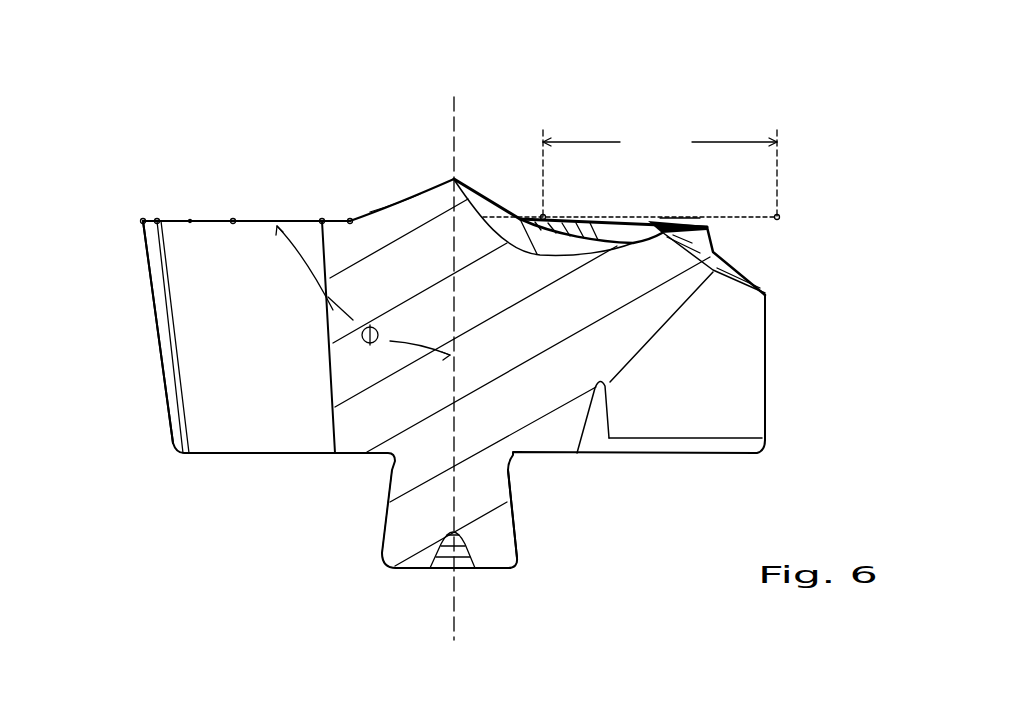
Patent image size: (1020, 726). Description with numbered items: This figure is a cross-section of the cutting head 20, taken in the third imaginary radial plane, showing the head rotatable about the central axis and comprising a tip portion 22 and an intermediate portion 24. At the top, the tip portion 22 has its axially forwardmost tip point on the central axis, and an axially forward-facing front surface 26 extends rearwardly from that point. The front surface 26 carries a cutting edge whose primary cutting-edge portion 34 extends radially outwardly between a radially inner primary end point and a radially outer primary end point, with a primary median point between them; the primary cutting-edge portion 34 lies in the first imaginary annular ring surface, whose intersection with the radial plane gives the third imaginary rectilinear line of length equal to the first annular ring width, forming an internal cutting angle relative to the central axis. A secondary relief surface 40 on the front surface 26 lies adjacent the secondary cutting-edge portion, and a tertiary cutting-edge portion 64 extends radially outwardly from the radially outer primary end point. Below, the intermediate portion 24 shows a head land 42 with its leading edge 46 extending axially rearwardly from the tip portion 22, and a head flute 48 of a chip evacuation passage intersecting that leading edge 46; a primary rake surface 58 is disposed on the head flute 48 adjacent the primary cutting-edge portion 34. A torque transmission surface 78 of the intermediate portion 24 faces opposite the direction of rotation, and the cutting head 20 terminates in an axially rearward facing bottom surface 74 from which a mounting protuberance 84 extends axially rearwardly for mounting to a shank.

The cutting head 20 is at (503, 163).
The tip portion 22 is at (743, 243).
The intermediate portion 24 is at (780, 355).
The front surface 26 is at (408, 197).
The primary cutting-edge portion 34 is at (255, 220).
The secondary relief surface 40 is at (387, 207).
The head land 42 is at (157, 382).
The leading edge 46 is at (152, 313).
The head flute 48 is at (255, 380).
The primary rake surface 58 is at (230, 266).
The tertiary cutting-edge portion 64 is at (143, 220).
The bottom surface 74 is at (657, 453).
The torque transmission surface 78 is at (716, 381).
The mounting protuberance 84 is at (483, 525).